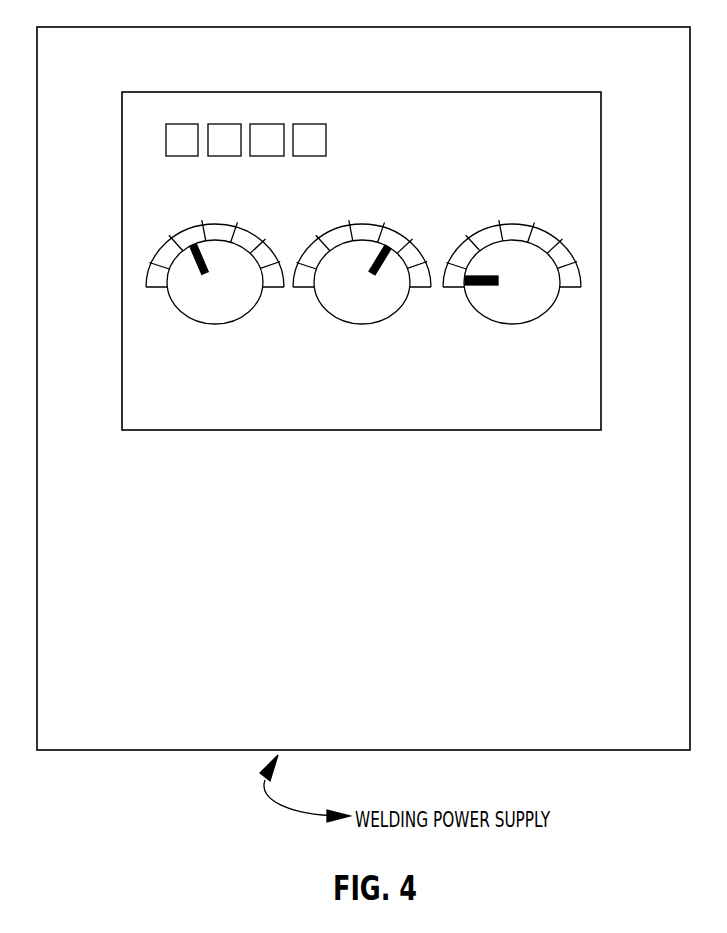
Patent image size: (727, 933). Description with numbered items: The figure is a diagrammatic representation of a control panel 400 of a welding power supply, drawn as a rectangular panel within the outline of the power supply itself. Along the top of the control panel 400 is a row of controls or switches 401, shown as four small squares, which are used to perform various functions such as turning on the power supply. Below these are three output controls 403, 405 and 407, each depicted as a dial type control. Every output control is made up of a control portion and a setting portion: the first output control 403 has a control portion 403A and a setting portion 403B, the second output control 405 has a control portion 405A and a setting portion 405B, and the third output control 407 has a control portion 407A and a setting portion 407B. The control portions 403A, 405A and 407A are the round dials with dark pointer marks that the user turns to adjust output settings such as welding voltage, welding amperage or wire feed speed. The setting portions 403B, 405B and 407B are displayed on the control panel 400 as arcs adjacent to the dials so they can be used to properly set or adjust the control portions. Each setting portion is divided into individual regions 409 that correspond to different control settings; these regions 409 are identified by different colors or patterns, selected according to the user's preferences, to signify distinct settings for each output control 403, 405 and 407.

The control panel 400 is at (464, 440).
The controls or switches 401 is at (183, 128).
The output control 403 is at (167, 297).
The control portion 403A is at (217, 312).
The setting portion 403B is at (245, 235).
The output control 405 is at (322, 303).
The control portion 405A is at (363, 307).
The setting portion 405B is at (373, 227).
The output control 407 is at (472, 303).
The control portion 407A is at (518, 308).
The setting portion 407B is at (518, 218).
The regions 409 is at (185, 235).